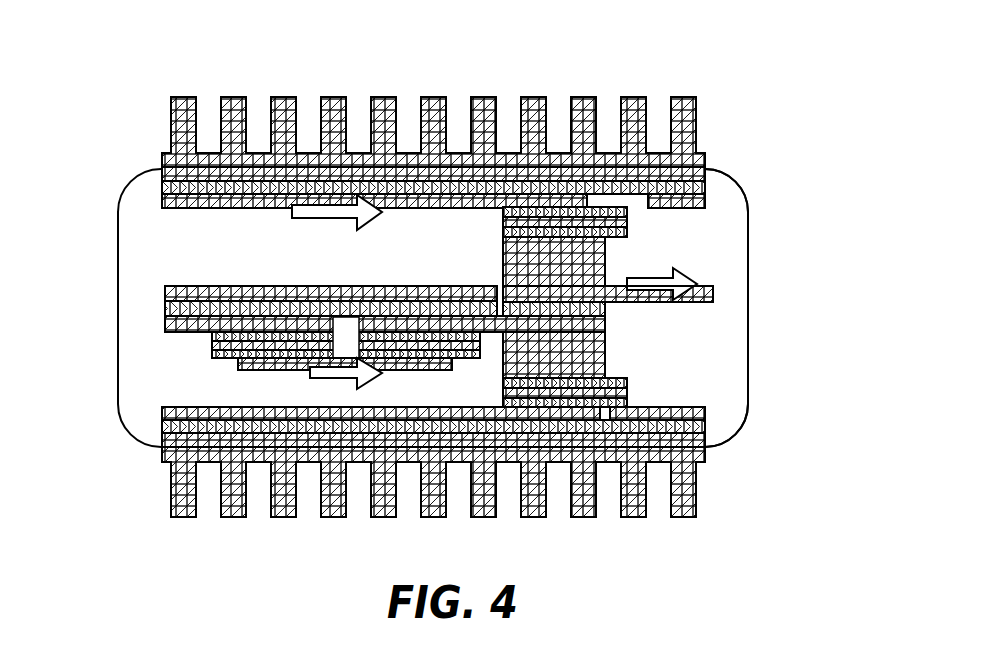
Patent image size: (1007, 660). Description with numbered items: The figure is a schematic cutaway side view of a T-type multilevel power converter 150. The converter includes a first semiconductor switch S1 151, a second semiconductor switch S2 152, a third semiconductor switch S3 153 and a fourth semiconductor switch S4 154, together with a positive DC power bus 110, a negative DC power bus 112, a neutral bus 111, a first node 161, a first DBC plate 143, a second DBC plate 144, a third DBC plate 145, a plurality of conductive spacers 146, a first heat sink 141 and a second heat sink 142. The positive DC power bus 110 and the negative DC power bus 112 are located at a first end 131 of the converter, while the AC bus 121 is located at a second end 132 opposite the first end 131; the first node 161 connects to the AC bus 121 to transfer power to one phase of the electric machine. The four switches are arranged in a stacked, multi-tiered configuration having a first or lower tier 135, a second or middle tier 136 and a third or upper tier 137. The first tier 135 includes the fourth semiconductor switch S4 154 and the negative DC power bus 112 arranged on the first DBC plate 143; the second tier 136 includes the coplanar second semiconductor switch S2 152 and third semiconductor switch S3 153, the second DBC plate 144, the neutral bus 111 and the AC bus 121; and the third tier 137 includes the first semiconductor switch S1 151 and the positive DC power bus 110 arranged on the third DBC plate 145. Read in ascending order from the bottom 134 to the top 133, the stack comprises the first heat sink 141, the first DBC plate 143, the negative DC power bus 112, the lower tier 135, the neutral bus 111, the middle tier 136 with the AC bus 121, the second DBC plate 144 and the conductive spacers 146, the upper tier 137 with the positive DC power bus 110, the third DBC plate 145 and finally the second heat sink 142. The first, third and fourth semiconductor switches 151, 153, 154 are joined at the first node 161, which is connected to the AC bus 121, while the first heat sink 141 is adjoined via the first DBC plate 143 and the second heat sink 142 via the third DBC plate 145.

The top 133 is at (175, 94).
The second heat sink 142 is at (333, 96).
The T-type multilevel power converter 150 is at (433, 94).
The third DBC plate 145 is at (162, 177).
The positive DC power bus 110 is at (162, 200).
The second DBC plate 144 is at (165, 308).
The first end 131 is at (108, 313).
The second semiconductor switch S2 152 is at (209, 345).
The neutral bus 111 is at (238, 365).
The negative DC power bus 112 is at (162, 415).
The first DBC plate 143 is at (162, 435).
The bottom 134 is at (177, 520).
The first heat sink 141 is at (333, 518).
The third semiconductor switch S3 153 is at (468, 362).
The conductive spacers 146 is at (573, 275).
The first node 161 is at (607, 285).
The third tier 137 is at (753, 178).
The first semiconductor switch S1 151 is at (630, 213).
The AC bus 121 is at (713, 293).
The second tier 136 is at (765, 308).
The second end 132 is at (793, 348).
The fourth semiconductor switch S4 154 is at (630, 401).
The first tier 135 is at (753, 457).